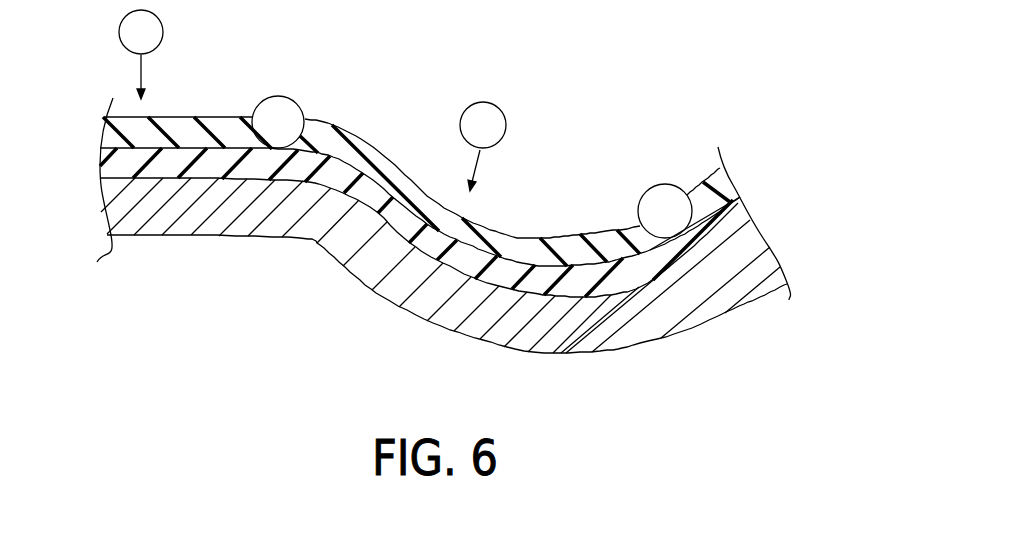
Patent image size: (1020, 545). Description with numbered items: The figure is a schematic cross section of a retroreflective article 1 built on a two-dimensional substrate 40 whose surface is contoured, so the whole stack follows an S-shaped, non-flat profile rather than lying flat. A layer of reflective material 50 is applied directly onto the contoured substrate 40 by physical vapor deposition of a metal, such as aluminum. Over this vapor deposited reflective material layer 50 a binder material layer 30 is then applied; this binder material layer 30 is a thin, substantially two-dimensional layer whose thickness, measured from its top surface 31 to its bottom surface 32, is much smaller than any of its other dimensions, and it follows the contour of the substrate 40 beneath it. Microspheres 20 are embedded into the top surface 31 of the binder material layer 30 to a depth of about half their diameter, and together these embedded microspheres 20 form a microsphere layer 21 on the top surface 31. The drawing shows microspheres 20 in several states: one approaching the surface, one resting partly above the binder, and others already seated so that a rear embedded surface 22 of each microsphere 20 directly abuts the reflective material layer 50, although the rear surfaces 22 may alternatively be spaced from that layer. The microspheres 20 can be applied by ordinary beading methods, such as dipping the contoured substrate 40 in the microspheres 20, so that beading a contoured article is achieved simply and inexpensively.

The retroreflective article 1 is at (716, 61).
The microspheres 20 is at (276, 110).
The microsphere layer 21 is at (325, 84).
The rear embedded surface 22 is at (675, 224).
The binder material layer 30 is at (145, 131).
The top surface 31 is at (170, 116).
The bottom surface 32 is at (144, 153).
The substrate 40 is at (398, 295).
The reflective material layer 50 is at (640, 265).